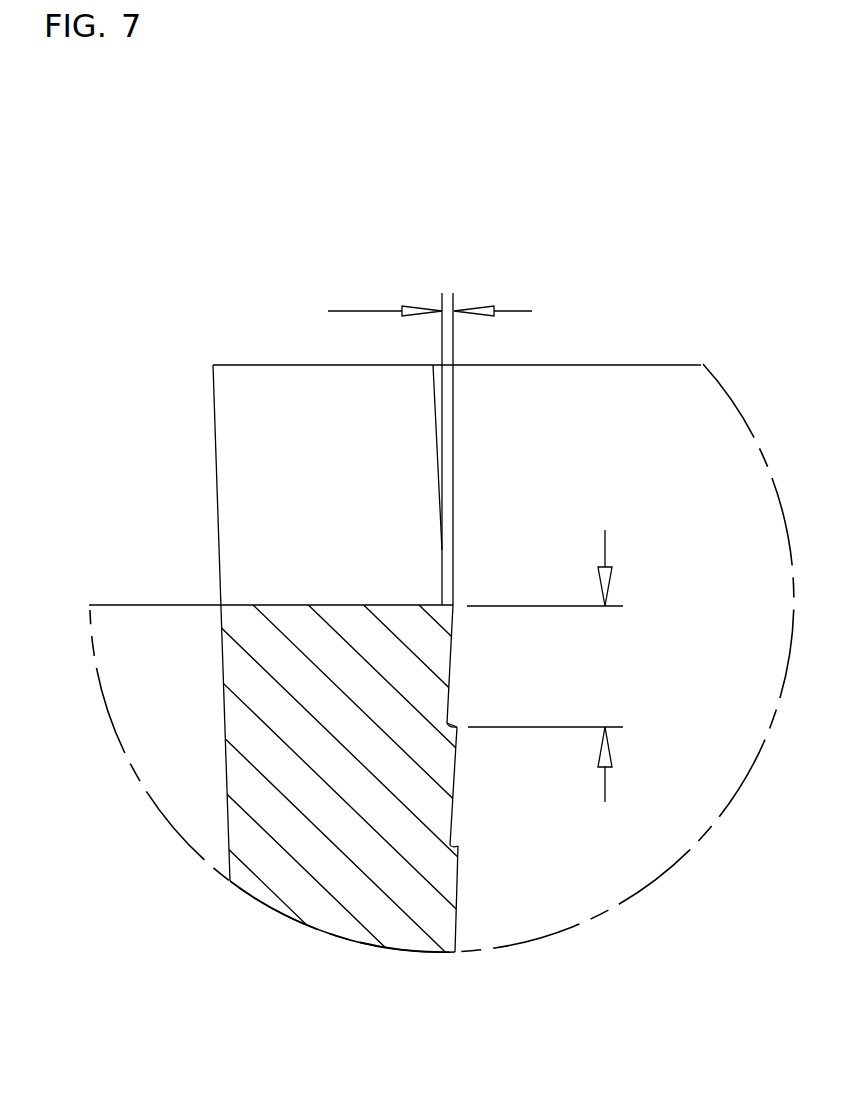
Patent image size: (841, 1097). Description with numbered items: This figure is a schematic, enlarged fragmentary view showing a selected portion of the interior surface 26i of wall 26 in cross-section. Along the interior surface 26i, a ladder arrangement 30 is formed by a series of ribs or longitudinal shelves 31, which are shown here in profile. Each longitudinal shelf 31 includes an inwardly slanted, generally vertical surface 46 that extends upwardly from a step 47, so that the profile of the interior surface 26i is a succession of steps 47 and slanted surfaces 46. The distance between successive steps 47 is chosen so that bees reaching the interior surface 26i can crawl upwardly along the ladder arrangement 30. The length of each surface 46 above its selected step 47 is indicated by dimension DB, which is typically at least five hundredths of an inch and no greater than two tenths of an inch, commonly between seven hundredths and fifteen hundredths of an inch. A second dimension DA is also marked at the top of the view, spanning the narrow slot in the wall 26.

The side wall 26 is at (222, 710).
The interior surface 26i is at (512, 857).
The inwardly slanted, generally vertical surface 46 is at (453, 643).
The step 47 is at (449, 720).
The longitudinal shelf 31 is at (458, 723).
The ladder arrangement 30 is at (473, 710).
The dimension DA is at (447, 312).
The dimension DB is at (545, 654).